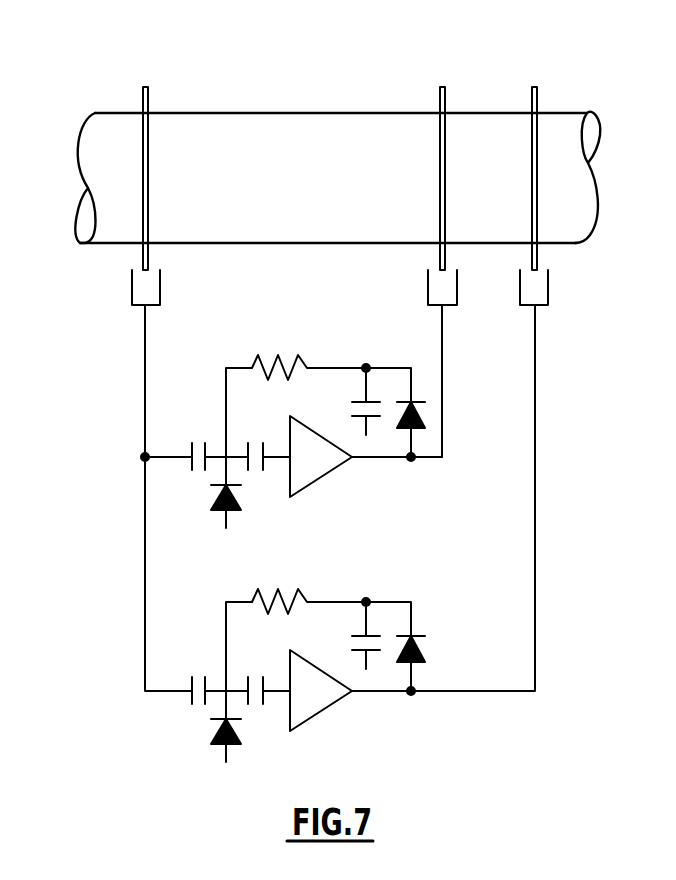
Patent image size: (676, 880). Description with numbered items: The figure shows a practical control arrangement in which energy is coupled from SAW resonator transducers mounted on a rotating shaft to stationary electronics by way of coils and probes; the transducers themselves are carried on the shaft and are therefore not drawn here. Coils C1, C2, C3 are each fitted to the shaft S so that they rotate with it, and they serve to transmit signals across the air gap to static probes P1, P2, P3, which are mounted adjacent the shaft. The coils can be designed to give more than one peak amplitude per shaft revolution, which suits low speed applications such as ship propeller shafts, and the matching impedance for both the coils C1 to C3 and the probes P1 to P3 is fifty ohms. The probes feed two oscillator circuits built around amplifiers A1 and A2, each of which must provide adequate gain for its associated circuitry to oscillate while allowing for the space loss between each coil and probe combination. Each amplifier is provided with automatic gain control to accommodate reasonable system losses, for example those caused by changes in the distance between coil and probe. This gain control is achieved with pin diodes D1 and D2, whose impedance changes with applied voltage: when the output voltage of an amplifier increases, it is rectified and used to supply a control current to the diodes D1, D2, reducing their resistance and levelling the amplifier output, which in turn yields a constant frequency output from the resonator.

The shaft S is at (332, 120).
The coil C1 is at (152, 104).
The coil C2 is at (437, 89).
The coil C3 is at (539, 96).
The static probe P1 is at (134, 291).
The static probe P2 is at (430, 291).
The static probe P3 is at (546, 291).
The pin diode D1 is at (214, 487).
The pin diode D2 is at (192, 726).
The amplifier A1 is at (315, 470).
The amplifier A2 is at (337, 701).